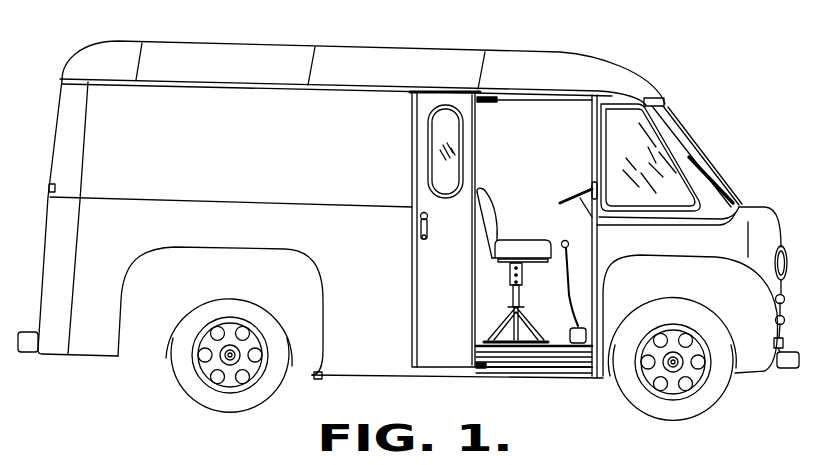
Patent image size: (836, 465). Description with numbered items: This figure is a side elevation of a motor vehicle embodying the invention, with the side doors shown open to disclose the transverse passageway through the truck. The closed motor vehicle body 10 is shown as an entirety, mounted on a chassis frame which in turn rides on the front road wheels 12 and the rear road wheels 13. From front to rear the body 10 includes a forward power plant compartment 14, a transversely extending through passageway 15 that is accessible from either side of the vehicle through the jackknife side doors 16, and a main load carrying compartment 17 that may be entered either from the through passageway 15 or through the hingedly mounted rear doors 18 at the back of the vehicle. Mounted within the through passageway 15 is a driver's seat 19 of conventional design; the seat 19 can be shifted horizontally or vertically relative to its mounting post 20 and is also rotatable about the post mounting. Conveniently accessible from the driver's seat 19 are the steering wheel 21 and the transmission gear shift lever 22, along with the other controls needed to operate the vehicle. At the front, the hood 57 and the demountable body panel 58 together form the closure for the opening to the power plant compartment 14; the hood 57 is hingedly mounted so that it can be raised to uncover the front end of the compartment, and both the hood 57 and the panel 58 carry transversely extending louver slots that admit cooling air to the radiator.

The closed motor vehicle body 10 is at (264, 42).
The front road wheels 12 is at (713, 395).
The rear road wheels 13 is at (275, 393).
The forward power plant compartment 14 is at (755, 207).
The through passageway 15 is at (542, 144).
The jackknife side doors 16 is at (453, 360).
The main load carrying compartment 17 is at (292, 130).
The rear doors 18 is at (46, 186).
The driver's seat 19 is at (537, 216).
The mounting post 20 is at (522, 292).
The steering wheel 21 is at (566, 197).
The transmission gear shift lever 22 is at (569, 243).
The hood 57 is at (760, 228).
The demountable body panel 58 is at (770, 327).